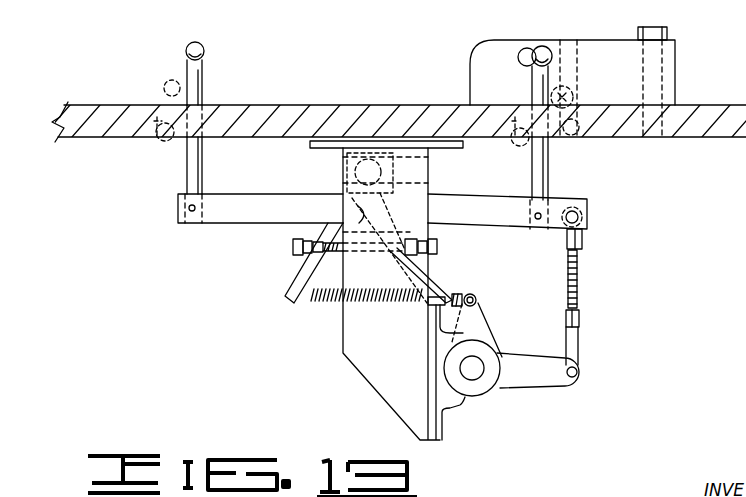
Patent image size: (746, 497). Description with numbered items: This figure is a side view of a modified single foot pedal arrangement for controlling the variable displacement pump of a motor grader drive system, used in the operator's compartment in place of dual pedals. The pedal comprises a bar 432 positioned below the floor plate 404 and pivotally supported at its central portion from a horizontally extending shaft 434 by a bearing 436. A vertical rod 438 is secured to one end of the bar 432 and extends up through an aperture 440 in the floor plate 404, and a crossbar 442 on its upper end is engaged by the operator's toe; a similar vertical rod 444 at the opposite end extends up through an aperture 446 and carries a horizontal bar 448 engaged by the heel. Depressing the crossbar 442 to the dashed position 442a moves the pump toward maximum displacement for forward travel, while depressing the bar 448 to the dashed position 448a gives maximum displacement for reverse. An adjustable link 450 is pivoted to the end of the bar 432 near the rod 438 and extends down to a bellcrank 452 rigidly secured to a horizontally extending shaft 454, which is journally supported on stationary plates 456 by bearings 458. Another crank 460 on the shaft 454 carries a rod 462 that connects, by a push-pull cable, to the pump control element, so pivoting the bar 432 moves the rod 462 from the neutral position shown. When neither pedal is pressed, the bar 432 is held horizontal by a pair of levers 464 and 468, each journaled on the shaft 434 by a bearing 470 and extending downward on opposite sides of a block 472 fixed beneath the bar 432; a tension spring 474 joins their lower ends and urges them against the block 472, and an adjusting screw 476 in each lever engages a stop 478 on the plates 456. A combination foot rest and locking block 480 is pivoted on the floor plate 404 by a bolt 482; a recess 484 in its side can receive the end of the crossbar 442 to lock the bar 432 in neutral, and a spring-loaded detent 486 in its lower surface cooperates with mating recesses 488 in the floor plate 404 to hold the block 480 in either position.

The floor plate 404 is at (293, 113).
The bar 432 is at (233, 196).
The horizontally extending shaft 434 is at (428, 160).
The bearing 436 is at (428, 184).
The vertical rod 438 is at (549, 191).
The aperture 440 is at (517, 147).
The crossbar 442 is at (547, 46).
The dashed line position of crossbar 442a is at (576, 91).
The vertical rod 444 is at (187, 177).
The aperture 446 is at (162, 141).
The horizontal bar 448 is at (200, 44).
The dashed line position of horizontal bar 448a is at (168, 88).
The adjustable link 450 is at (578, 296).
The bellcrank 452 is at (545, 383).
The horizontally extending shaft 454 is at (475, 366).
The stationary plates 456 is at (392, 393).
The bearings 458 is at (455, 401).
The crank 460 is at (472, 318).
The rod 462 is at (480, 295).
The lever 464 is at (304, 264).
The lever 468 is at (430, 280).
The bearing 470 is at (348, 162).
The block 472 is at (352, 210).
The tension spring 474 is at (333, 298).
The adjusting screw 476 is at (294, 246).
The stop 478 is at (347, 244).
The combination foot rest and locking block 480 is at (477, 61).
The bolt 482 is at (662, 27).
The recess 484 is at (525, 47).
The spring-loaded detent 486 is at (580, 104).
The mating recesses 488 is at (569, 147).